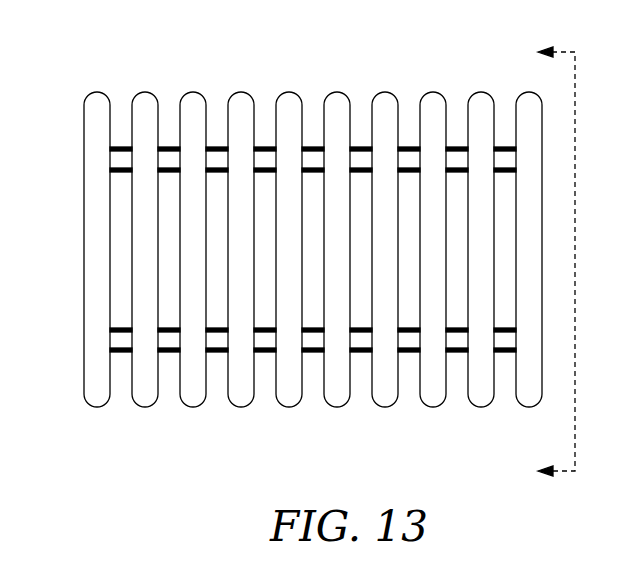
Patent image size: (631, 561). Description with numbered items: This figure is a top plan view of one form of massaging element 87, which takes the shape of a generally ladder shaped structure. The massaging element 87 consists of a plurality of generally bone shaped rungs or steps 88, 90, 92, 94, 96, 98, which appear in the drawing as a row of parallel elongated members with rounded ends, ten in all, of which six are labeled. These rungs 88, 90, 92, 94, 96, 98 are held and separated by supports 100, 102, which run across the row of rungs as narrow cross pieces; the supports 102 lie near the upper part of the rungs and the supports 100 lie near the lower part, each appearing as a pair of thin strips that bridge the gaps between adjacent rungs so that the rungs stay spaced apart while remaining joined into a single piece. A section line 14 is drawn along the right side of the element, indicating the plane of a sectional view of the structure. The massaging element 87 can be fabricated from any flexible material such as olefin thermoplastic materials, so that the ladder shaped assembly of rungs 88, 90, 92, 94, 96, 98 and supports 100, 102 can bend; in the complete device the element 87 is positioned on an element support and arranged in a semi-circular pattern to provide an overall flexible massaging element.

The section line 14 is at (540, 265).
The massaging element 87 is at (206, 78).
The rung 88 is at (98, 407).
The rung 90 is at (194, 407).
The rung 92 is at (288, 90).
The rung 94 is at (385, 407).
The rung 96 is at (479, 407).
The rung 98 is at (528, 407).
The support 100 is at (112, 353).
The support 102 is at (112, 173).